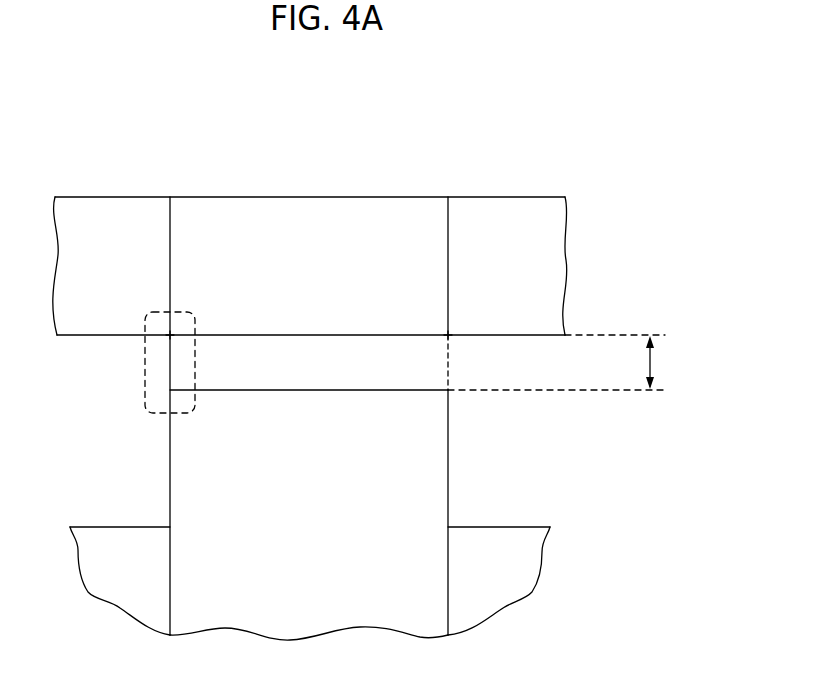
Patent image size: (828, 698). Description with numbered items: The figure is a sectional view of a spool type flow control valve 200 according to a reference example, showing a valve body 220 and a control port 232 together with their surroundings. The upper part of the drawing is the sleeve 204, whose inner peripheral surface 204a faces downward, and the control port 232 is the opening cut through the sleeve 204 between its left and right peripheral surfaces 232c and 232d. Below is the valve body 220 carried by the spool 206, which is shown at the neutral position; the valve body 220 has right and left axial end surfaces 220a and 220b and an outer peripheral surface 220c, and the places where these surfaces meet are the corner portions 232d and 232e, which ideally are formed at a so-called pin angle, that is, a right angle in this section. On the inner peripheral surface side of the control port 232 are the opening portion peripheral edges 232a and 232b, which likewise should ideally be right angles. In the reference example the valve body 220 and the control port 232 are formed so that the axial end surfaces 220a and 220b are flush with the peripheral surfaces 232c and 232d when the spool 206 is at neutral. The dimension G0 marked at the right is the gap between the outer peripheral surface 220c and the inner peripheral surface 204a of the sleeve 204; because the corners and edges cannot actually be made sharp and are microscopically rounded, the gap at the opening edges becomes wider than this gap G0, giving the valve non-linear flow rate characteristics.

The spool type flow control valve 200 is at (81, 172).
The sleeve 204 is at (507, 196).
The inner peripheral surface of the sleeve 204a is at (120, 334).
The control port 232 is at (212, 210).
The opening portion peripheral edge 232a is at (175, 340).
The opening portion peripheral edge 232b is at (446, 340).
The peripheral surface of the control port 232c is at (172, 247).
The peripheral surface of the control port / corner portion 232d is at (446, 250).
The corner portion 232e is at (455, 385).
The spool 206 is at (519, 404).
The gap G0 is at (656, 362).
The valve body 220 is at (432, 488).
The axial end surface of the valve body 220a is at (168, 455).
The axial end surface of the valve body 220b is at (450, 432).
The outer peripheral surface of the valve body 220c is at (321, 392).